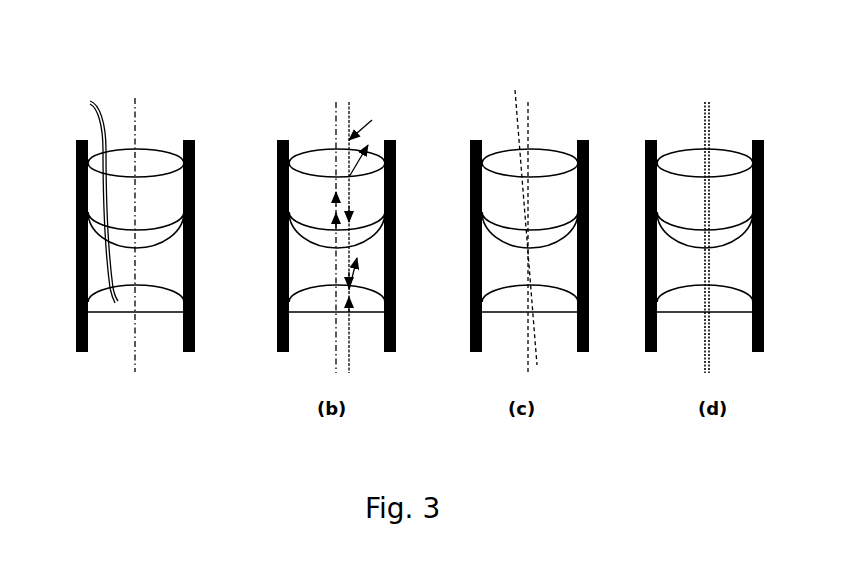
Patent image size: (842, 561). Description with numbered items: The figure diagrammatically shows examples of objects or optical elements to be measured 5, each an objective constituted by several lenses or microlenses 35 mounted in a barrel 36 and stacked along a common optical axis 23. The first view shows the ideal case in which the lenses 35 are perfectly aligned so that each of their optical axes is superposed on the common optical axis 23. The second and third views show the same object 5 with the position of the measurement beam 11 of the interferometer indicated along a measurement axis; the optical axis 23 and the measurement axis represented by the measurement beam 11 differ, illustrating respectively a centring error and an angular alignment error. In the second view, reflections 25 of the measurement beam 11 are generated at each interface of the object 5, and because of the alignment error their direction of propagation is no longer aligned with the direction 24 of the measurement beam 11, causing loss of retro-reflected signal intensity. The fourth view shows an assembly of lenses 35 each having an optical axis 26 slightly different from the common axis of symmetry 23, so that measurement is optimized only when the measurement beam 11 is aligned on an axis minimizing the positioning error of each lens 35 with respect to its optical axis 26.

The object to be measured 5 is at (106, 236).
The measurement beam 11 is at (358, 102).
The common optical axis 23 is at (142, 112).
The direction of the measurement beam 24 is at (356, 372).
The reflections 25 is at (369, 202).
The optical axis of a lens 26 is at (715, 325).
The lenses 35 is at (89, 197).
The barrel 36 is at (76, 229).